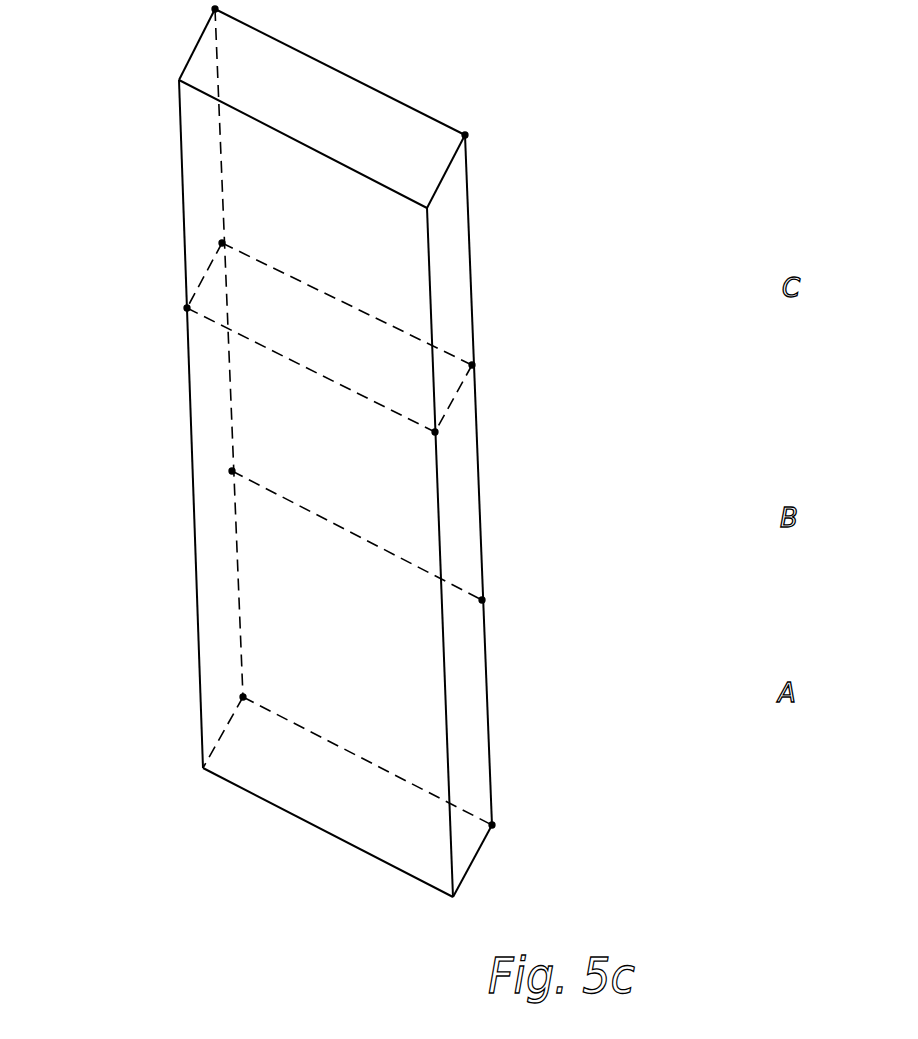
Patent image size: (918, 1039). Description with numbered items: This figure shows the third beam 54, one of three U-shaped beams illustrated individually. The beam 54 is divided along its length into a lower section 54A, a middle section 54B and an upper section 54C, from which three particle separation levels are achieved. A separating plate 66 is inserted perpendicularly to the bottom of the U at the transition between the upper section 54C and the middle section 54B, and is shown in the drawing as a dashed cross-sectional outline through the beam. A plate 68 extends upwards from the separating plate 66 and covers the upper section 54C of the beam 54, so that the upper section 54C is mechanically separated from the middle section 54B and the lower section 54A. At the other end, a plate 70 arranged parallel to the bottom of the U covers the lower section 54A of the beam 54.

The third beam 54 is at (142, 53).
The lower section 54A is at (280, 618).
The middle section 54B is at (383, 500).
The upper section 54C is at (360, 217).
The separating plate 66 is at (357, 333).
The plate 68 is at (247, 230).
The plate 70 is at (410, 722).